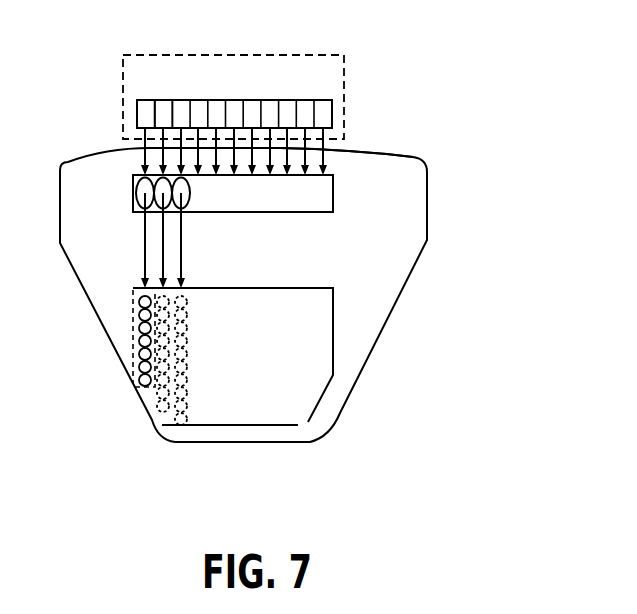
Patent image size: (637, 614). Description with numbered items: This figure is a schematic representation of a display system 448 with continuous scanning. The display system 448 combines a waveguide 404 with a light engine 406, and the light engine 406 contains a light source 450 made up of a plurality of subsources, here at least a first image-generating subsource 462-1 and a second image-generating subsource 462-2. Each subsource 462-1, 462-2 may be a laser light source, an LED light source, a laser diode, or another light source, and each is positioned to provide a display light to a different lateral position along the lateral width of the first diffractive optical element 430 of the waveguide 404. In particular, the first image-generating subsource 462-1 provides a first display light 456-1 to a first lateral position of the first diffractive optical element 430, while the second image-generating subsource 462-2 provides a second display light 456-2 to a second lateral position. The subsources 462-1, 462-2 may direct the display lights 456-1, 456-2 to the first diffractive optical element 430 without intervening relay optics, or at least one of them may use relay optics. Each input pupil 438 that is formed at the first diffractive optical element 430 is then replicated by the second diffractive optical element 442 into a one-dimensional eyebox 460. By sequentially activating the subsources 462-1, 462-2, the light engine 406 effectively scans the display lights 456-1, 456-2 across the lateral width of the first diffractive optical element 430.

The display system 448 is at (465, 121).
The waveguide 404 is at (451, 216).
The light source 450 is at (366, 111).
The light engine 406 is at (312, 90).
The first image-generating subsource 462-1 is at (145, 118).
The second image-generating subsource 462-2 is at (163, 105).
The first display light 456-1 is at (310, 148).
The second display light 456-2 is at (312, 149).
The first diffractive optical element 430 is at (332, 193).
The input pupil 438 is at (143, 197).
The second diffractive optical element 442 is at (323, 348).
The one-dimensional eyebox 460 is at (133, 303).